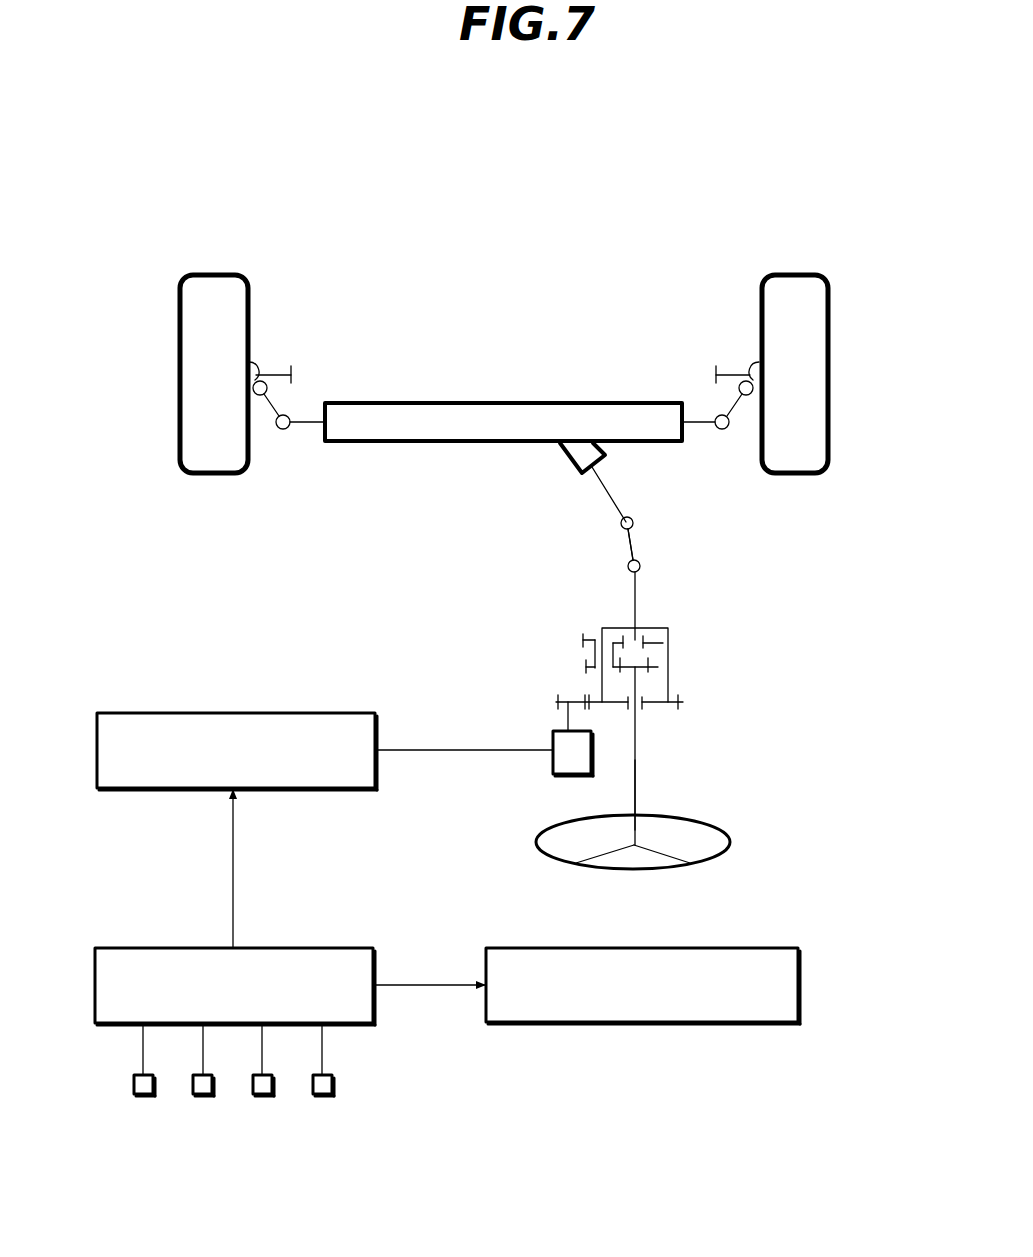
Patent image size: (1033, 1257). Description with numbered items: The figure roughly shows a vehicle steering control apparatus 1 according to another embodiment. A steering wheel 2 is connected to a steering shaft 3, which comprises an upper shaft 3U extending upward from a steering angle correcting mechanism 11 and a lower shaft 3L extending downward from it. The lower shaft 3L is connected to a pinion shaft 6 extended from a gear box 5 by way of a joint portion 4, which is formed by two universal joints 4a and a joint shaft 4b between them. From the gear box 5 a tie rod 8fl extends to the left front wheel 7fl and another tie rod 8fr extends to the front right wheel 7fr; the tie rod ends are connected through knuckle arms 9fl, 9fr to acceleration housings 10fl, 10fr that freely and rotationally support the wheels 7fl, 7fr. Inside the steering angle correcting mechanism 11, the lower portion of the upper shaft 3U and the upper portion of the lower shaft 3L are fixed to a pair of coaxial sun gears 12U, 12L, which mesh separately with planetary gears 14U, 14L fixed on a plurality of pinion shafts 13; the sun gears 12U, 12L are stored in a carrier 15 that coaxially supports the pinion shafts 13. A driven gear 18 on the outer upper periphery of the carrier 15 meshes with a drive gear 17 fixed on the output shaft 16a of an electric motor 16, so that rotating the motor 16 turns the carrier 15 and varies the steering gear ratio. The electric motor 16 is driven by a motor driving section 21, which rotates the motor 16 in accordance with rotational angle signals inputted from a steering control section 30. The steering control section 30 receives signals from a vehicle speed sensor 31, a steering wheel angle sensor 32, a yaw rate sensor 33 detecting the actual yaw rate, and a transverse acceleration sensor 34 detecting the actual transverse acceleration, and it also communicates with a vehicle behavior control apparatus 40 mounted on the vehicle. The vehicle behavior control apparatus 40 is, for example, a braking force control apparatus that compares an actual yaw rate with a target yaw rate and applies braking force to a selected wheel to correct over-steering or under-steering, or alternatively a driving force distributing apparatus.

The vehicle steering control apparatus 1 is at (498, 268).
The steering wheel 2 is at (731, 838).
The steering shaft 3 is at (641, 781).
The upper shaft 3U is at (637, 746).
The lower shaft 3L is at (638, 604).
The joint portion 4 is at (619, 552).
The universal joint 4a is at (633, 522).
The joint shaft 4b is at (635, 545).
The gear box 5 is at (510, 401).
The pinion shaft 6 is at (608, 490).
The left front wheel 7fl is at (222, 272).
The front right wheel 7fr is at (792, 272).
The tie rod 8fl is at (312, 418).
The tie rod 8fr is at (710, 418).
The knuckle arm 9fl is at (270, 410).
The knuckle arm 9fr is at (734, 410).
The acceleration housing 10fl is at (254, 370).
The acceleration housing 10fr is at (750, 370).
The steering angle correcting mechanism 11 is at (773, 647).
The sun gear 12L is at (667, 633).
The sun gear 12U is at (667, 668).
The pinion shaft 13 is at (593, 652).
The planetary gear 14L is at (583, 642).
The planetary gear 14U is at (586, 667).
The carrier 15 is at (667, 657).
The electric motor 16 is at (552, 772).
The output shaft 16a is at (567, 722).
The drive gear 17 is at (552, 698).
The driven gear 18 is at (678, 702).
The motor driving section 21 is at (302, 713).
The steering control section 30 is at (302, 948).
The vehicle speed sensor 31 is at (140, 1095).
The steering wheel angle sensor 32 is at (200, 1095).
The yaw rate sensor 33 is at (260, 1095).
The transverse acceleration sensor 34 is at (320, 1095).
The vehicle behavior control apparatus 40 is at (660, 948).